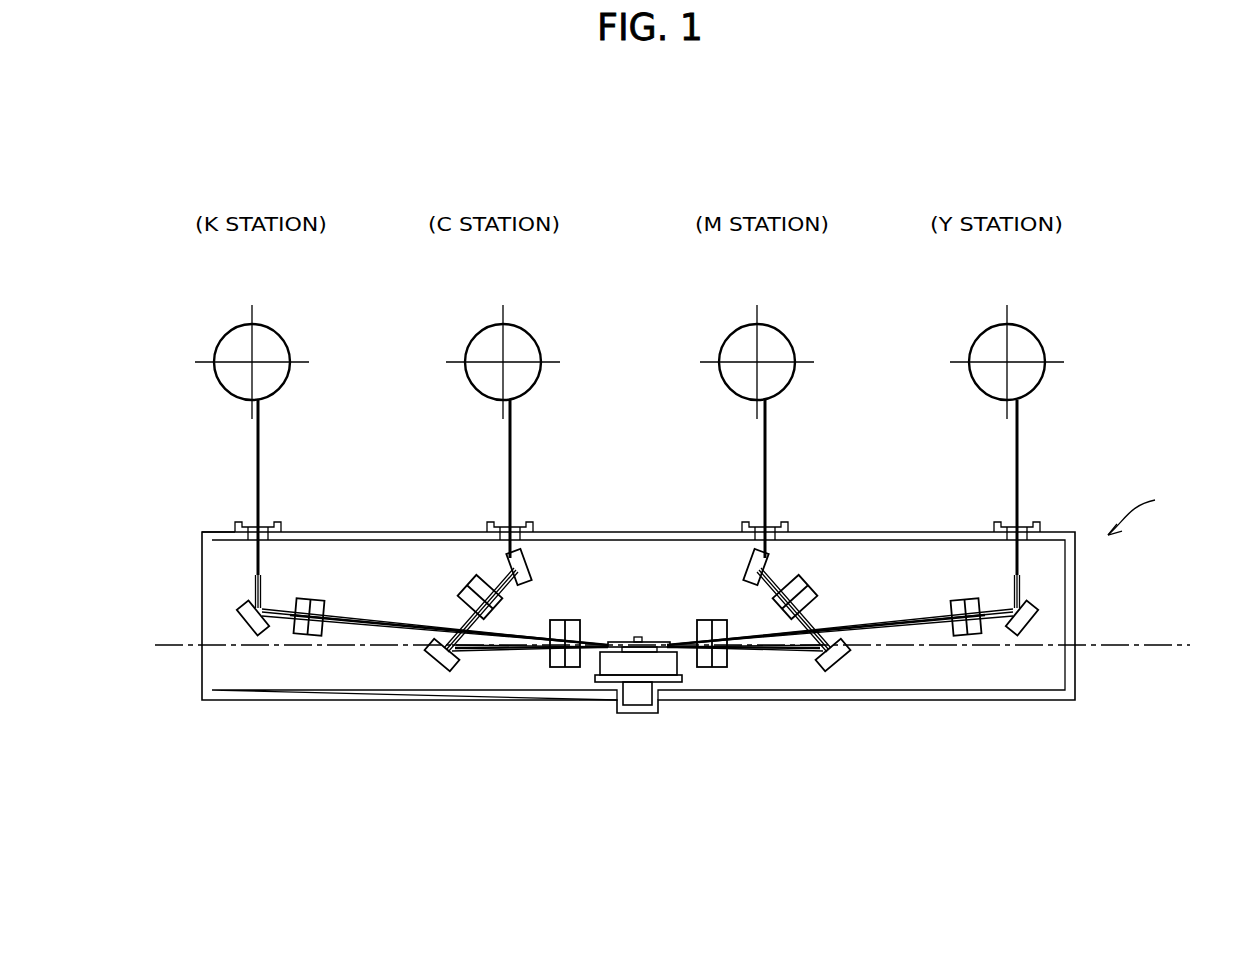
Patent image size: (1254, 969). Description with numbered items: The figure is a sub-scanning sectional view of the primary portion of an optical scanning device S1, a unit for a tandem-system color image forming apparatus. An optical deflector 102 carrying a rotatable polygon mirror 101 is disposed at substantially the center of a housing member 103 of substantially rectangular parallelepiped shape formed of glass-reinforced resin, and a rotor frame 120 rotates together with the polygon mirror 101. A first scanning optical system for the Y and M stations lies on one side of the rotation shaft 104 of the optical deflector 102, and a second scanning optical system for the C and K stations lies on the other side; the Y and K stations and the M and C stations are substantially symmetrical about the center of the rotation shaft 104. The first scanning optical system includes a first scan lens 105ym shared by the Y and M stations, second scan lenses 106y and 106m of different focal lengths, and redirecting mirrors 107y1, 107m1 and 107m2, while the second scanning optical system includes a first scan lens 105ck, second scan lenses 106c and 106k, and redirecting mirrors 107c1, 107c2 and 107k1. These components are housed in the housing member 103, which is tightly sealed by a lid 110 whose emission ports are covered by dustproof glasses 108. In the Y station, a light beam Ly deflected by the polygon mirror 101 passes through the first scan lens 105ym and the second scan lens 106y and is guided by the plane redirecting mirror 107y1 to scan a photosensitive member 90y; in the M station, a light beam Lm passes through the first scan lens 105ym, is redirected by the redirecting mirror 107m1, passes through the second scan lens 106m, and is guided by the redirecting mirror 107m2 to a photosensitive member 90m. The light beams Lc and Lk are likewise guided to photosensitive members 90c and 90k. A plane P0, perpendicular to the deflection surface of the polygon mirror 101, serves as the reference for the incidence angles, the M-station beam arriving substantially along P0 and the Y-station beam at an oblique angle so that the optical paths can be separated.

The photosensitive member 90k is at (265, 337).
The photosensitive member 90c is at (516, 337).
The photosensitive member 90m is at (770, 337).
The photosensitive member 90y is at (1020, 337).
The light beam Lk is at (260, 447).
The light beam Lc is at (512, 447).
The light beam Lm is at (767, 447).
The light beam Ly is at (1019, 447).
The lid 110 is at (217, 531).
The dustproof glass 108 is at (274, 522).
The housing member 103 is at (1060, 700).
The optical scanning device S1 is at (1186, 512).
The plane P0 is at (1183, 645).
The redirecting mirror 107k1 is at (248, 617).
The redirecting mirror 107c2 is at (528, 566).
The redirecting mirror 107c1 is at (446, 660).
The redirecting mirror 107m2 is at (747, 566).
The redirecting mirror 107m1 is at (830, 660).
The redirecting mirror 107y1 is at (1028, 617).
The second scan lens 106k is at (311, 627).
The second scan lens 106c is at (475, 592).
The second scan lens 106m is at (800, 594).
The second scan lens 106y is at (965, 630).
The first scan lens 105ck is at (559, 662).
The first scan lens 105ym is at (720, 662).
The rotation shaft 104 is at (637, 637).
The rotatable polygon mirror 101 is at (661, 643).
The rotor frame 120 is at (663, 663).
The optical deflector 102 is at (637, 700).